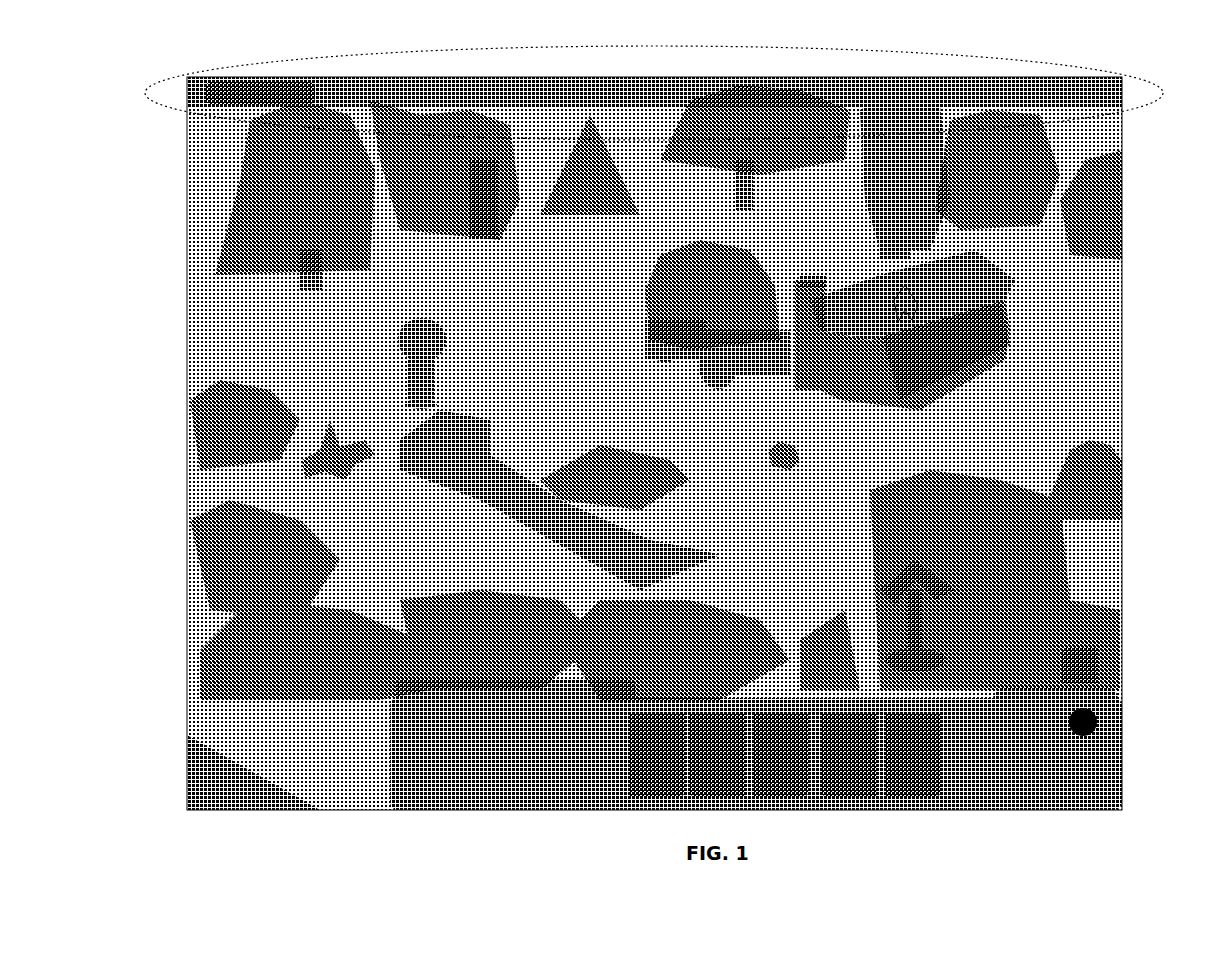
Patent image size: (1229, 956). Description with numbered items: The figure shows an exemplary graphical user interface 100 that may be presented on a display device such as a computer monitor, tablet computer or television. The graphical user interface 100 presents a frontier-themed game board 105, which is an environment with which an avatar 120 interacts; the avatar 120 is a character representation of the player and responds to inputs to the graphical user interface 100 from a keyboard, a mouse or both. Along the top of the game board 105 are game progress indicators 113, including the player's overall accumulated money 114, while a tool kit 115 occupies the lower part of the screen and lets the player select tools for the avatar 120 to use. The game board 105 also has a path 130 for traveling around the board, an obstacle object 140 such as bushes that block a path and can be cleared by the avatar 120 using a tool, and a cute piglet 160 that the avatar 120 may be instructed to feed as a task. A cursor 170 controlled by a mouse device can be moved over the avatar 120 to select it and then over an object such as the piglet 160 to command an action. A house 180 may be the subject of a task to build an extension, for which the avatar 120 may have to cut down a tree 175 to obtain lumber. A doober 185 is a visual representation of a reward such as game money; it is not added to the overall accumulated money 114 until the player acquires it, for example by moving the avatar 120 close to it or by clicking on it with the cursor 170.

The graphical user interface 100 is at (695, 443).
The game board 105 is at (654, 447).
The game progress indicators 113 is at (158, 118).
The overall accumulated money 114 is at (272, 76).
The tool kit 115 is at (1128, 686).
The avatar 120 is at (447, 362).
The path 130 is at (560, 500).
The obstacle object 140 is at (1052, 478).
The piglet 160 is at (812, 466).
The cursor 170 is at (886, 283).
The tree 175 is at (872, 219).
The house 180 is at (985, 380).
The doober 185 is at (348, 460).